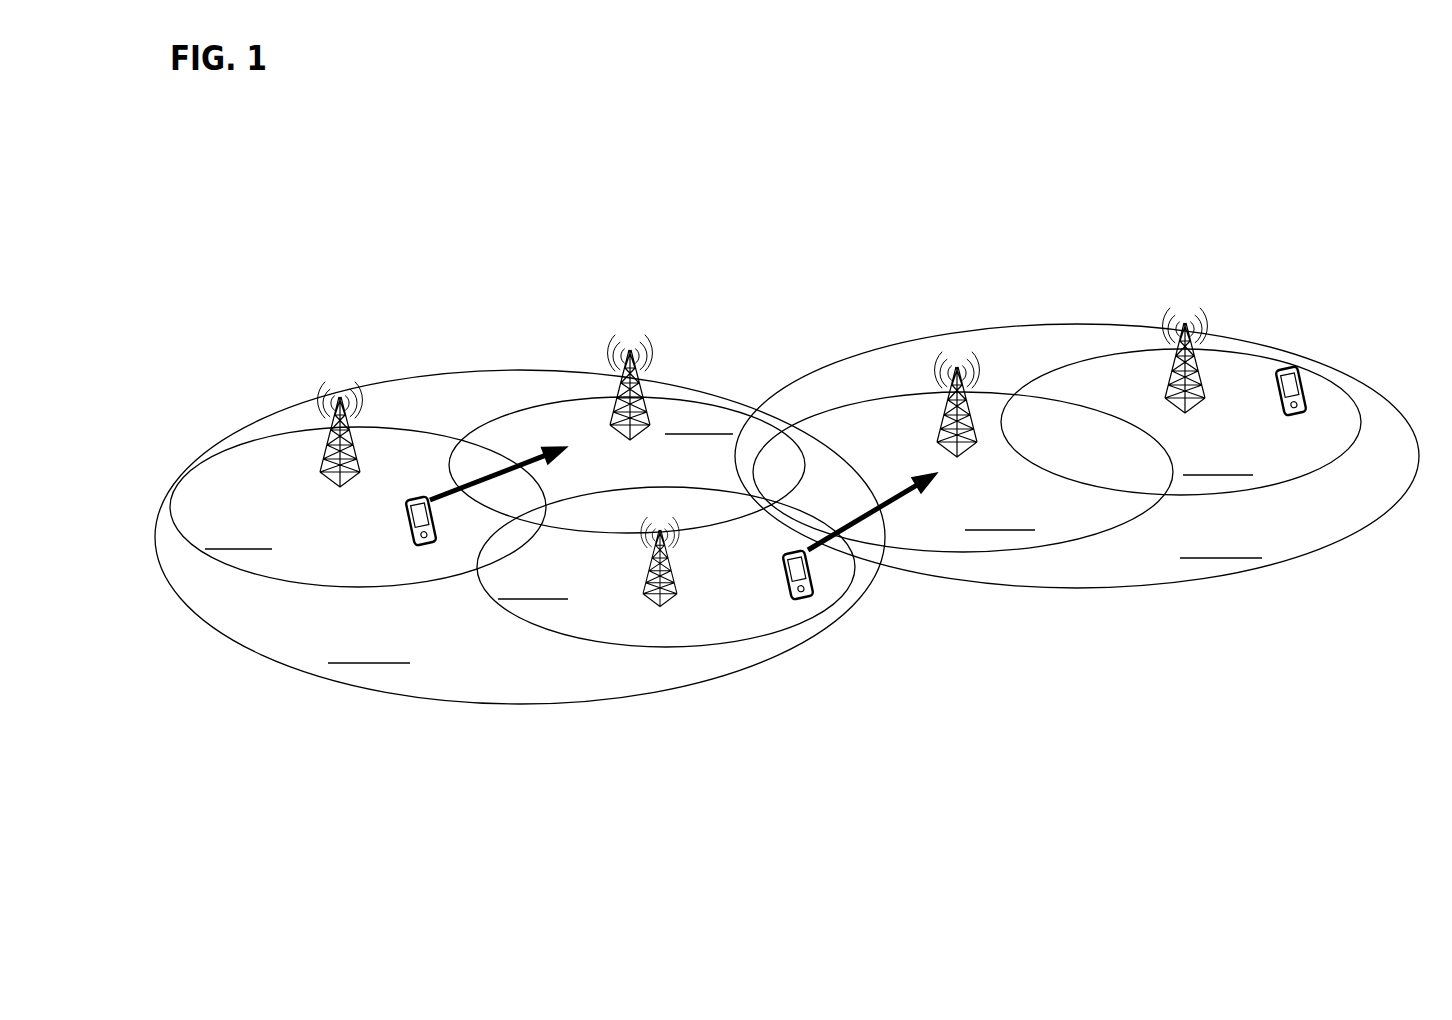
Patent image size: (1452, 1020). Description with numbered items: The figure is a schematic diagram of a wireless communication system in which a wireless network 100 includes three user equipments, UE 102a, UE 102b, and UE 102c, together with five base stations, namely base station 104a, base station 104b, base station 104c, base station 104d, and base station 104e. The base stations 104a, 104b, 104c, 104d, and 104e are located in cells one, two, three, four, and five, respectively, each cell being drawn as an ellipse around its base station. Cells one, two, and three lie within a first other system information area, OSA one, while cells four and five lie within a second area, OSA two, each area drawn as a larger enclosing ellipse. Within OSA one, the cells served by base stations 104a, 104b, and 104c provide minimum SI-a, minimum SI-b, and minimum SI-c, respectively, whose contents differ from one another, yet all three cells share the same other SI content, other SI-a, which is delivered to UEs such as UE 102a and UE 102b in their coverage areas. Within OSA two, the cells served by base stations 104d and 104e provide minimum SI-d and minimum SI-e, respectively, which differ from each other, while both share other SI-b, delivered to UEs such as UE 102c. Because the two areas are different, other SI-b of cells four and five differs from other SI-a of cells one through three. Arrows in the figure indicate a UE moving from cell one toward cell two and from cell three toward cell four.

The wireless network 100 is at (1233, 132).
The UE 102a is at (408, 533).
The UE 102b is at (786, 590).
The UE 102c is at (1283, 408).
The base station 104a is at (326, 465).
The base station 104b is at (615, 412).
The base station 104c is at (648, 588).
The base station 104d is at (940, 432).
The base station 104e is at (1168, 381).